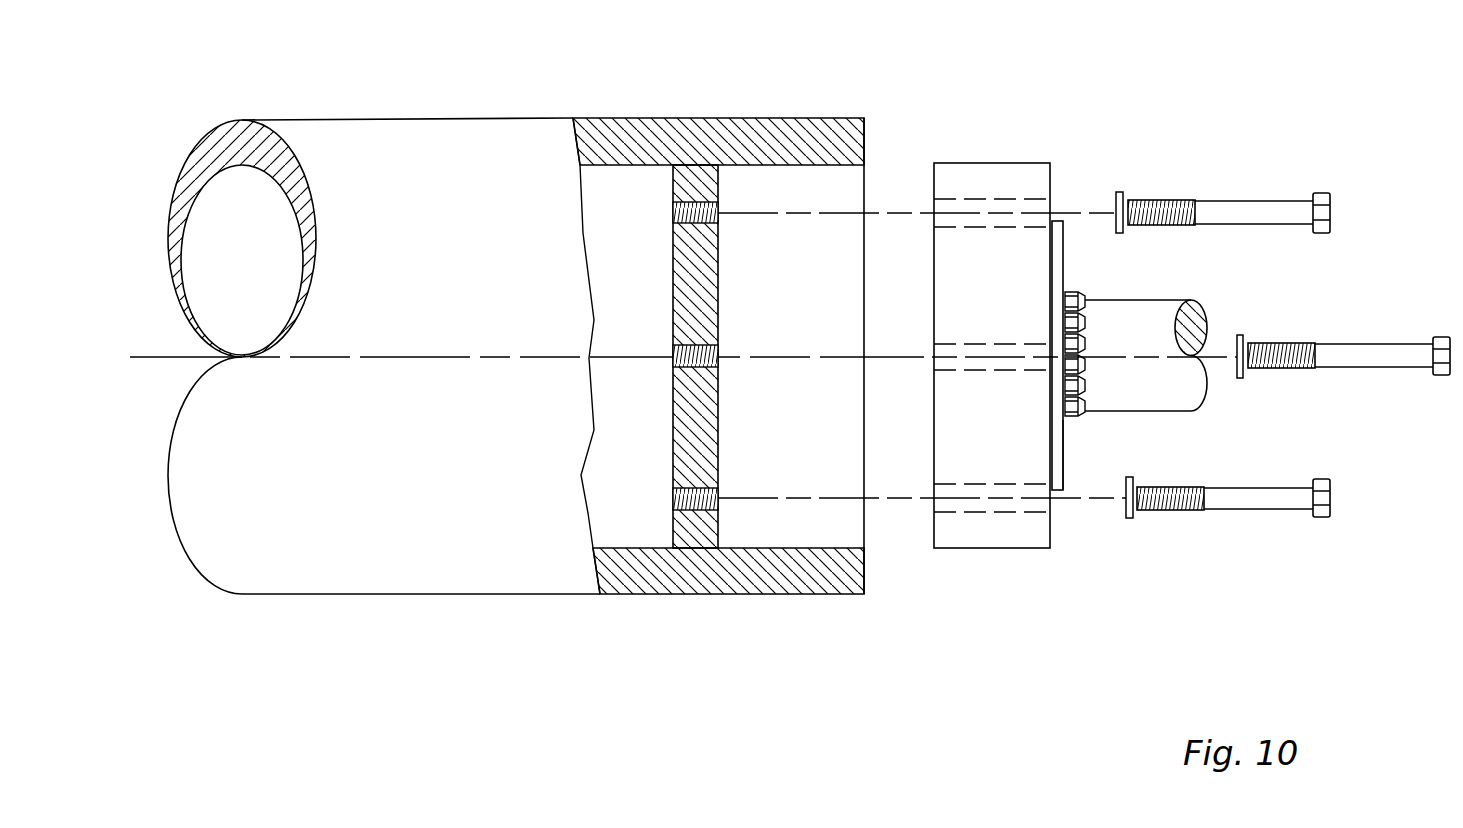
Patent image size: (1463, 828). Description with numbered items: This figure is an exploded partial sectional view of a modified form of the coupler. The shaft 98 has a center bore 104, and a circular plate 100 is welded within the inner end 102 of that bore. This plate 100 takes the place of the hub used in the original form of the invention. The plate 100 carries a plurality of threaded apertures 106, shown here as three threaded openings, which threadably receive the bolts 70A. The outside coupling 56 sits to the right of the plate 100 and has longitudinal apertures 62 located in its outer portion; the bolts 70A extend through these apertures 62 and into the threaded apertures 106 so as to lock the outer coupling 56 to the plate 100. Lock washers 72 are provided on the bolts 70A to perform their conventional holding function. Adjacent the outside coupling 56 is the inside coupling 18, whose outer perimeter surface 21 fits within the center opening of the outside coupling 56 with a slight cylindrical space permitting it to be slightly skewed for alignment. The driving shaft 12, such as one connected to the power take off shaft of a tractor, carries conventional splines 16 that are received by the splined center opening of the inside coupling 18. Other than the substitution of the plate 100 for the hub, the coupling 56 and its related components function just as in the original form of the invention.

The shaft 98 is at (431, 120).
The center bore 104 is at (786, 165).
The inner end 102 is at (864, 567).
The circular plate 100 is at (673, 411).
The threaded aperture 106 is at (718, 222).
The outside coupling 56 is at (1009, 163).
The longitudinal aperture 62 is at (977, 199).
The outer perimeter surface 21 is at (1057, 221).
The inside coupling 18 is at (1065, 433).
The spline 16 is at (1085, 312).
The driving shaft 12 is at (1167, 298).
The lock washer 72 is at (1120, 192).
The bolt 70A is at (1306, 207).